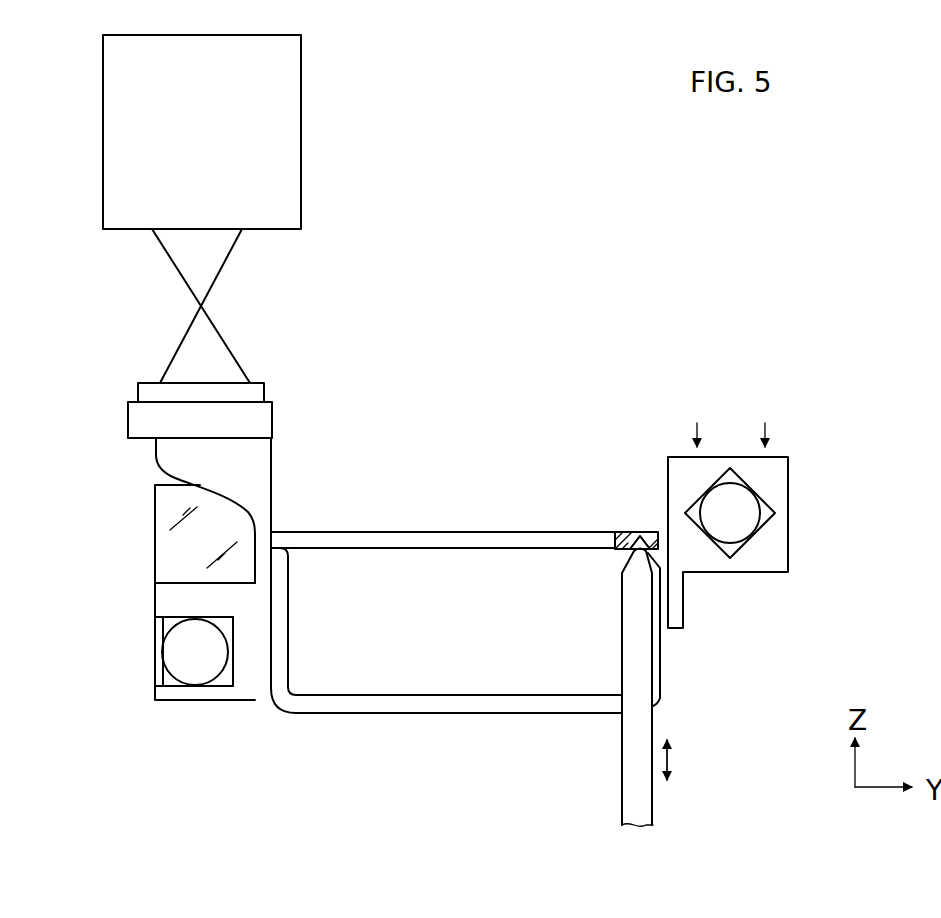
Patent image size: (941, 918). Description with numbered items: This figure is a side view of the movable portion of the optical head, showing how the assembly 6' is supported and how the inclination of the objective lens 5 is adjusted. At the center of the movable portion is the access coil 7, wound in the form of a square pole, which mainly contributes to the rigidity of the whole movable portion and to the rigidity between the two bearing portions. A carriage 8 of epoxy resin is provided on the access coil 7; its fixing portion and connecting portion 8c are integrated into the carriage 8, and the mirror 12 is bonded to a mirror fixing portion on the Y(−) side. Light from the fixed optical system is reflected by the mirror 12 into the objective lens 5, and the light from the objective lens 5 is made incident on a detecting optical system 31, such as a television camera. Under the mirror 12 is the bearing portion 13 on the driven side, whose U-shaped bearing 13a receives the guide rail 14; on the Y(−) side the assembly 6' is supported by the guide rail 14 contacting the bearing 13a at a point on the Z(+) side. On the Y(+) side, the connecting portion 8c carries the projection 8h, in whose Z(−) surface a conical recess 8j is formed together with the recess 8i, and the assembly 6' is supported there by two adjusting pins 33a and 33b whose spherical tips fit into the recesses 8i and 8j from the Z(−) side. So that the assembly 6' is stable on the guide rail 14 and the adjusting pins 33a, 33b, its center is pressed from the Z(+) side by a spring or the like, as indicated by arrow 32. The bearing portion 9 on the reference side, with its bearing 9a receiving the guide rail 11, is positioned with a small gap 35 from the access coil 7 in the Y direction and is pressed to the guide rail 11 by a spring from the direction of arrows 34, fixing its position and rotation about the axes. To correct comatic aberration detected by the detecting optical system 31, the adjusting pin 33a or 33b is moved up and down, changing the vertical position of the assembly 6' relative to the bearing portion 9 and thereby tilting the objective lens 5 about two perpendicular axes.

The detecting optical system 31 is at (294, 130).
The objective lens 5 is at (210, 382).
The guide rail 14 is at (263, 420).
The mirror 12 is at (163, 520).
The U-shaped bearing 13a is at (167, 618).
The bearing portion on driven side 13 is at (223, 687).
The assembly 6' is at (446, 625).
The carriage 8 is at (285, 542).
The access coil 7 is at (518, 703).
The arrow 32 is at (422, 521).
The connecting portion 8c is at (502, 545).
The projection 8h is at (627, 540).
The conical recess 8j is at (632, 533).
The conical recess 8i is at (640, 542).
The gap 35 is at (665, 518).
The adjusting pin 33a is at (622, 758).
The adjusting pin 33b is at (654, 629).
The bearing portion on reference side 9 is at (788, 474).
The bearing 9a is at (743, 477).
The guide rail 11 is at (767, 520).
The arrows 34 is at (787, 414).